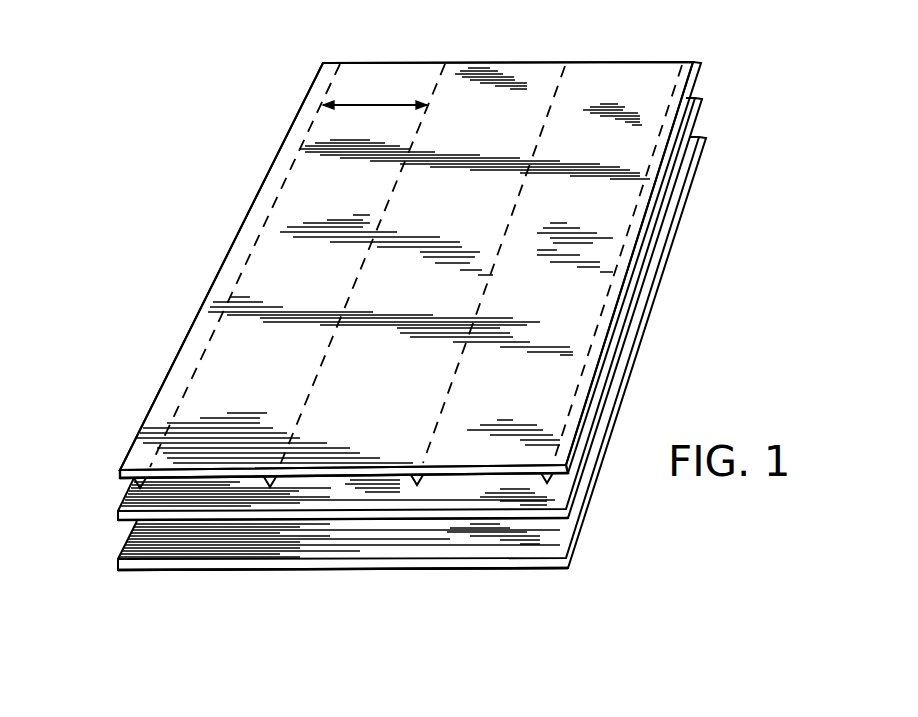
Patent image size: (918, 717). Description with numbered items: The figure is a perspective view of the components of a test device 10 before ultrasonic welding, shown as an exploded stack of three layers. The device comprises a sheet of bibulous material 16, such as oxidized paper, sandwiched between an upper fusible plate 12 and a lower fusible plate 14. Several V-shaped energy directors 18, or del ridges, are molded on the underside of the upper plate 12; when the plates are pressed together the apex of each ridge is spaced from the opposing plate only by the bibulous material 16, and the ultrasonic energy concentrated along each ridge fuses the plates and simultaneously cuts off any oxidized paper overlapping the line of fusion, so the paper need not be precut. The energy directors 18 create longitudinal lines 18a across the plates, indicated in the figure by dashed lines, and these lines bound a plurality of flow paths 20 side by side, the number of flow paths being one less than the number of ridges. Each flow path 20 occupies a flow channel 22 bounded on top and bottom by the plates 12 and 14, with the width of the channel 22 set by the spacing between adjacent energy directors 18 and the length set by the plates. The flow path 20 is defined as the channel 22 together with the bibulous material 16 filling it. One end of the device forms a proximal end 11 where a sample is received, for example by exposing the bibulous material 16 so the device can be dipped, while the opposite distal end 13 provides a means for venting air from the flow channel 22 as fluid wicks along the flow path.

The test device 10 is at (198, 190).
The proximal end 11 is at (455, 590).
The fusible plate 12 is at (704, 66).
The distal end 13 is at (500, 58).
The fusible plate 14 is at (709, 140).
The bibulous material 16 is at (706, 100).
The energy director 18 is at (416, 486).
The longitudinal line 18a is at (560, 90).
The flow path 20 is at (370, 105).
The flow channel 22 is at (210, 480).